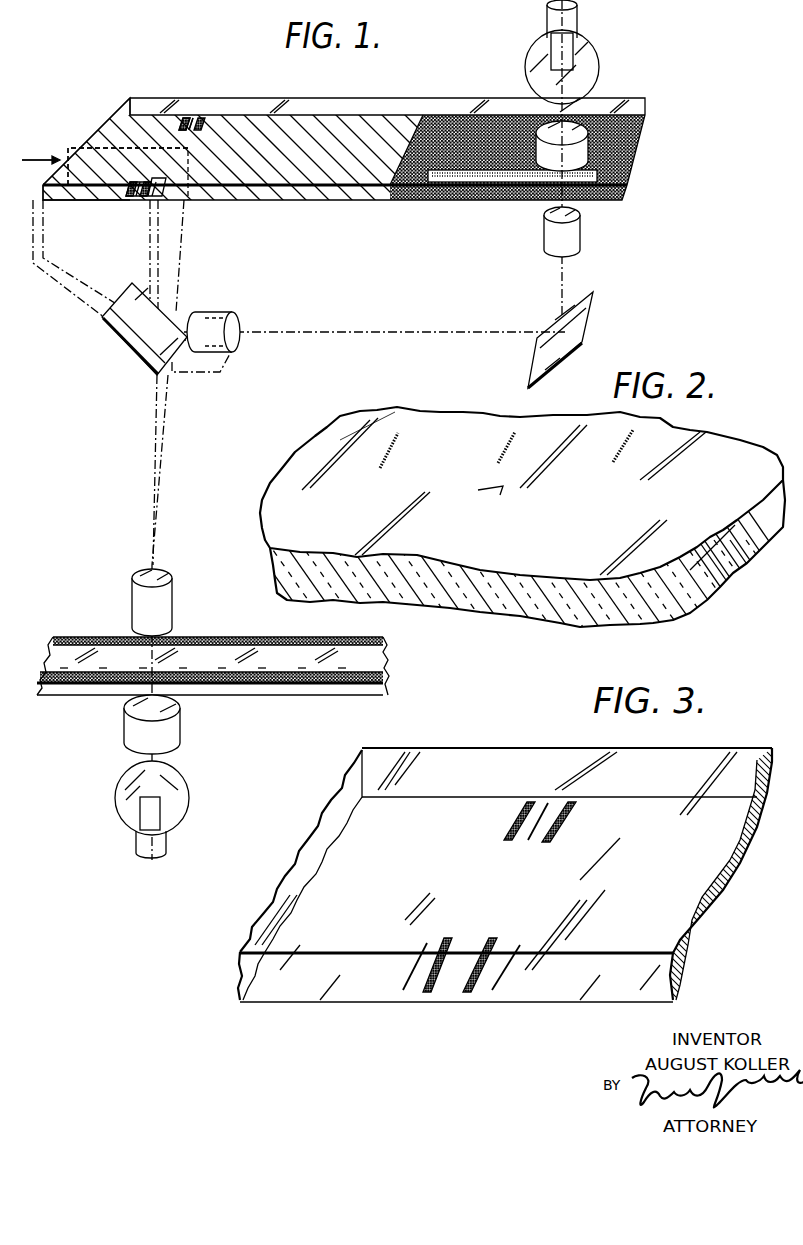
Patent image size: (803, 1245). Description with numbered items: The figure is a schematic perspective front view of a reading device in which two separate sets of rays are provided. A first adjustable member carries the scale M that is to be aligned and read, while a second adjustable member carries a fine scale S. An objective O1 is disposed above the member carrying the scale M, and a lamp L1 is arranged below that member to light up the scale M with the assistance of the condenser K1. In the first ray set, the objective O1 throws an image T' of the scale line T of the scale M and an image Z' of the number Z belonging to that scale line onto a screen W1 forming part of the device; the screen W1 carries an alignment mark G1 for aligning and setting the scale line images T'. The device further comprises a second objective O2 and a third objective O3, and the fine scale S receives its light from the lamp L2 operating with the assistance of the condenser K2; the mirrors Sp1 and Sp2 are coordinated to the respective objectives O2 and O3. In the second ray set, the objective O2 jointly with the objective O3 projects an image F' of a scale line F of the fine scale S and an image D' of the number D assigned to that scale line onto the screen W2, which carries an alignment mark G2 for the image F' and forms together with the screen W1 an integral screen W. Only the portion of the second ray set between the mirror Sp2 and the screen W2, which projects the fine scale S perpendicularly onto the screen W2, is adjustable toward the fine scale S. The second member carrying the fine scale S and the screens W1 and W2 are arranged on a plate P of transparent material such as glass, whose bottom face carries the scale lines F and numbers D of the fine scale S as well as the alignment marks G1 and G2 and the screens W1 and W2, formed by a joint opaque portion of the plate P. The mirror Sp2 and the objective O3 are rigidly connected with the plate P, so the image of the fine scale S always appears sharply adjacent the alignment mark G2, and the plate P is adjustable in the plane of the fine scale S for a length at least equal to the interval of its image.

In FIG. 1, the plate P is at (378, 100).
In FIG. 1, the fine scale S is at (422, 156).
In FIG. 1, the scale line of the fine scale F is at (517, 134).
In FIG. 2, the scale line of the fine scale F is at (526, 507).
In FIG. 1, the number of the fine scale D is at (512, 125).
In FIG. 2, the number of the fine scale D is at (473, 461).
In FIG. 1, the integral screen W is at (105, 169).
In FIG. 1, the first screen W1 is at (134, 122).
In FIG. 1, the second screen W2 is at (70, 194).
In FIG. 1, the image of the number of the fine scale D' is at (128, 145).
In FIG. 3, the image of the number of the fine scale D' is at (520, 875).
In FIG. 1, the image of the scale line of the fine scale F' is at (106, 158).
In FIG. 3, the image of the scale line of the fine scale F' is at (391, 987).
In FIG. 1, the image of the number of scale M Z' is at (174, 119).
In FIG. 1, the image of the scale line of scale M T' is at (198, 98).
In FIG. 3, the image of the scale line of scale M T' is at (547, 775).
In FIG. 1, the first alignment mark G1 is at (201, 118).
In FIG. 3, the first alignment mark G1 is at (514, 799).
In FIG. 1, the second alignment mark G2 is at (136, 194).
In FIG. 3, the second alignment mark G2 is at (466, 992).
In FIG. 1, the second lamp L2 is at (596, 51).
In FIG. 1, the second condenser K2 is at (590, 140).
In FIG. 1, the second objective O2 is at (586, 232).
In FIG. 1, the first mirror Sp1 is at (594, 325).
In FIG. 1, the second mirror Sp2 is at (120, 336).
In FIG. 1, the third objective O3 is at (212, 312).
In FIG. 1, the first objective O1 is at (134, 608).
In FIG. 1, the number of scale M Z is at (204, 637).
In FIG. 1, the scale line of scale M T is at (203, 638).
In FIG. 1, the scale M is at (388, 666).
In FIG. 1, the first condenser K1 is at (124, 733).
In FIG. 1, the first lamp L1 is at (122, 806).